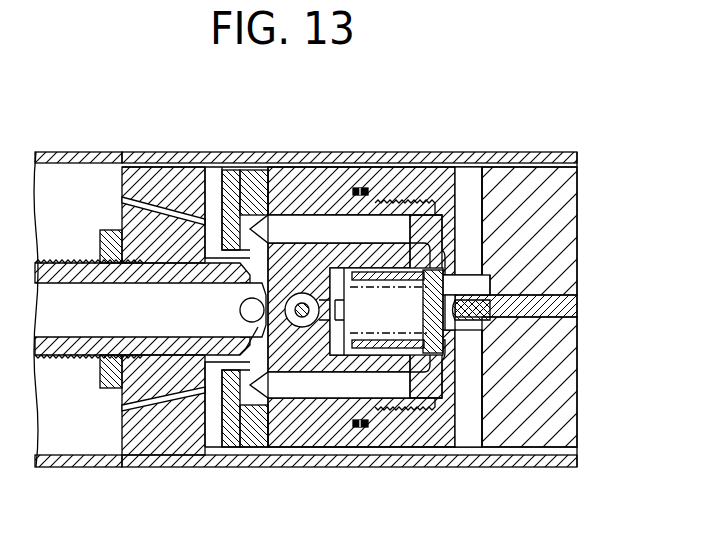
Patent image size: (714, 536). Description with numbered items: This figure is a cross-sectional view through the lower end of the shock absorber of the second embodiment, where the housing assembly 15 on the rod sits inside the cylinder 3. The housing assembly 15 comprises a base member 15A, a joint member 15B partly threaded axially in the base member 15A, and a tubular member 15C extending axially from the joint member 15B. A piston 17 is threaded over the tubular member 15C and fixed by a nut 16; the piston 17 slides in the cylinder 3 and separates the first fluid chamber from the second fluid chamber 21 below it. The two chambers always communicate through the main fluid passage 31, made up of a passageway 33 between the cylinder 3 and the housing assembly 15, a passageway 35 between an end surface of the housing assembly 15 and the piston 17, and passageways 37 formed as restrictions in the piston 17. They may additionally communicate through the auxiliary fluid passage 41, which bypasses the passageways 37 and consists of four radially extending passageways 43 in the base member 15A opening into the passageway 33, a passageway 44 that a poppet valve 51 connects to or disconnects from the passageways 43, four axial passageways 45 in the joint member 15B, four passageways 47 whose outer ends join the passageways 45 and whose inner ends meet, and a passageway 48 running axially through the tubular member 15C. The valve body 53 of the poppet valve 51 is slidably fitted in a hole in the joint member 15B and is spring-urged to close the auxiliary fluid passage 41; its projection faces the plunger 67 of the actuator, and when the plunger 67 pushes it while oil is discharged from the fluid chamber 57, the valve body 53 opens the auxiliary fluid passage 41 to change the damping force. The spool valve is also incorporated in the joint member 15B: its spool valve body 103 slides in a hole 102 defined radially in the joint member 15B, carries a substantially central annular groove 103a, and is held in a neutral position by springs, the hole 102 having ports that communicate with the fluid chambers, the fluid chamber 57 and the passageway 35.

The cylinder 3 is at (493, 235).
The housing assembly 15 is at (560, 191).
The base member 15A is at (563, 228).
The joint member 15B is at (318, 185).
The tubular member 15C is at (158, 195).
The nut 16 is at (104, 390).
The piston 17 is at (158, 435).
The second fluid chamber 21 is at (68, 183).
The main fluid passage 31 is at (429, 170).
The passageway 33 is at (288, 185).
The passageway 35 is at (212, 250).
The passageways 37 is at (152, 248).
The auxiliary fluid passage 41 is at (467, 188).
The passageways 43 is at (508, 195).
The passageway 44 is at (400, 195).
The passageways 45 is at (368, 222).
The passageways 47 is at (248, 200).
The passageway 48 is at (85, 302).
The poppet valve 51 is at (454, 334).
The valve body 53 is at (420, 360).
The fluid chamber 57 is at (400, 388).
The plunger 67 is at (537, 308).
The hole 102 is at (291, 320).
The spool valve body 103 is at (306, 328).
The annular groove 103a is at (252, 328).